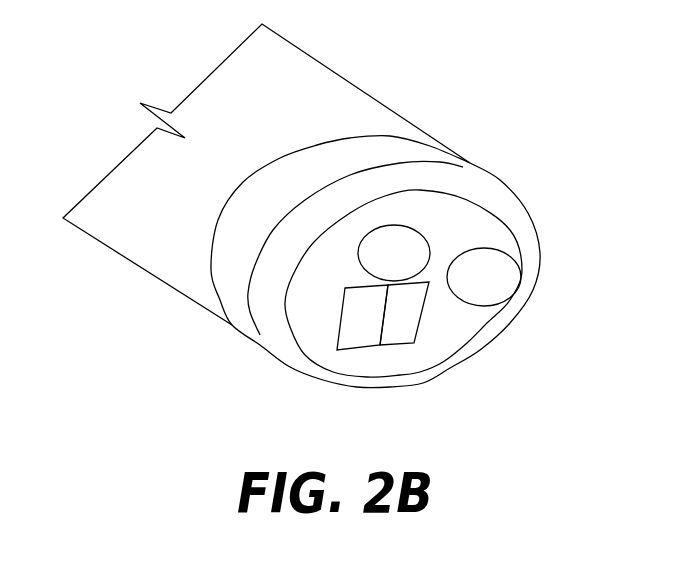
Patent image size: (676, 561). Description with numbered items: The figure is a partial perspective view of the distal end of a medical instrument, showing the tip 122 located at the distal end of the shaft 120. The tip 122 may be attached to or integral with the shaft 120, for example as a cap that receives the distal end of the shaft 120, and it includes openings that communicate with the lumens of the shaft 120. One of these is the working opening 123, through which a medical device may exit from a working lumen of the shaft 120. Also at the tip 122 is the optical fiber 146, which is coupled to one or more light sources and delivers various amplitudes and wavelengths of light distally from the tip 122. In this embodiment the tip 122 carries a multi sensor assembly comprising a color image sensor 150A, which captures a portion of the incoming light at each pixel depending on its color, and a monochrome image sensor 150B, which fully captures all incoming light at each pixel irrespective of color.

The shaft 120 is at (223, 78).
The tip 122 is at (266, 379).
The working opening 123 is at (497, 287).
The optical fiber 146 is at (415, 246).
The color image sensor 150A is at (355, 342).
The monochrome image sensor 150B is at (415, 337).